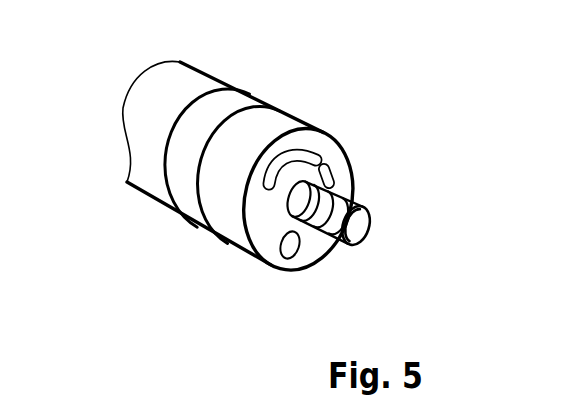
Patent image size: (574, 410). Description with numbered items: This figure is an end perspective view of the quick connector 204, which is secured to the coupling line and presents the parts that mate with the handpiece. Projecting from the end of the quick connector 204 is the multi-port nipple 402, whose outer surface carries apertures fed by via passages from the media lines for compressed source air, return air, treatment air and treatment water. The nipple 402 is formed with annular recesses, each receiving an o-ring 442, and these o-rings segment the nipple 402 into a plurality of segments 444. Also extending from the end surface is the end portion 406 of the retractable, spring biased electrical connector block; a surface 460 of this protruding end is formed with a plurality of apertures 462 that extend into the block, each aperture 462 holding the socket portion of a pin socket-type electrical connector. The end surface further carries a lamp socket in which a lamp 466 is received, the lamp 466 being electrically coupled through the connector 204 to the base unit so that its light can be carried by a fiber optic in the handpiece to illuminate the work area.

The quick connector 204 is at (307, 160).
The multi-port nipple 402 is at (371, 208).
The end portion of the electrical connector block 406 is at (331, 165).
The o-ring 442 is at (356, 182).
The segments 444 is at (330, 234).
The surface of the protruding end 460 is at (284, 172).
The apertures 462 is at (284, 209).
The lamp 466 is at (289, 243).